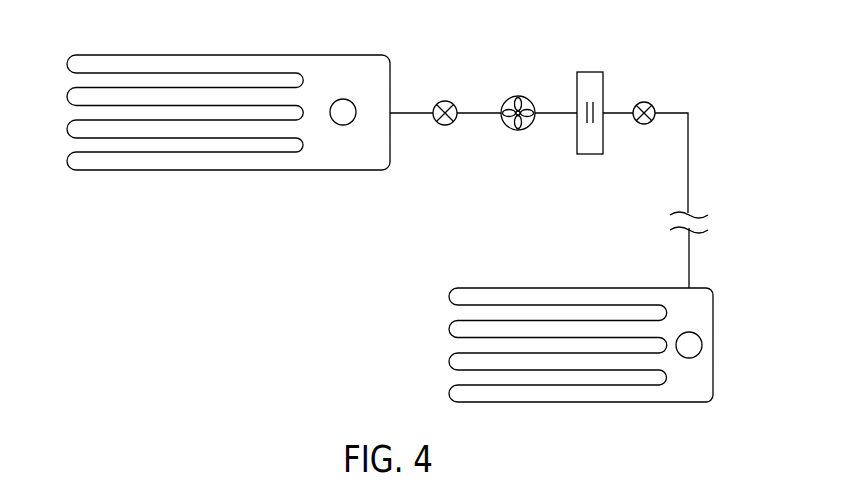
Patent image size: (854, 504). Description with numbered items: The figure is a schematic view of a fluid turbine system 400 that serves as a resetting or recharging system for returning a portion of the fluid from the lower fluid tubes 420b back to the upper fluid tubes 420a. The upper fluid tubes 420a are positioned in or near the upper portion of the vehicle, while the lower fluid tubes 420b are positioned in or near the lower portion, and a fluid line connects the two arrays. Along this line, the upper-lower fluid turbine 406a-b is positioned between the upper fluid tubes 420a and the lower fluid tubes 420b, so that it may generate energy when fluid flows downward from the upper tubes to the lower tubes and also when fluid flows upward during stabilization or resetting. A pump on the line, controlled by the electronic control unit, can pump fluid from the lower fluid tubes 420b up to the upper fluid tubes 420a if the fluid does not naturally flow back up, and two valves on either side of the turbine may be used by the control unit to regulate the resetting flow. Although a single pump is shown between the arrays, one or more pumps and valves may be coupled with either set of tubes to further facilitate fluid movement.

The fluid turbine system 400 is at (730, 107).
The upper fluid tubes 420a is at (342, 170).
The lower fluid tubes 420b is at (713, 345).
The upper-lower fluid turbine 406a-b is at (518, 131).